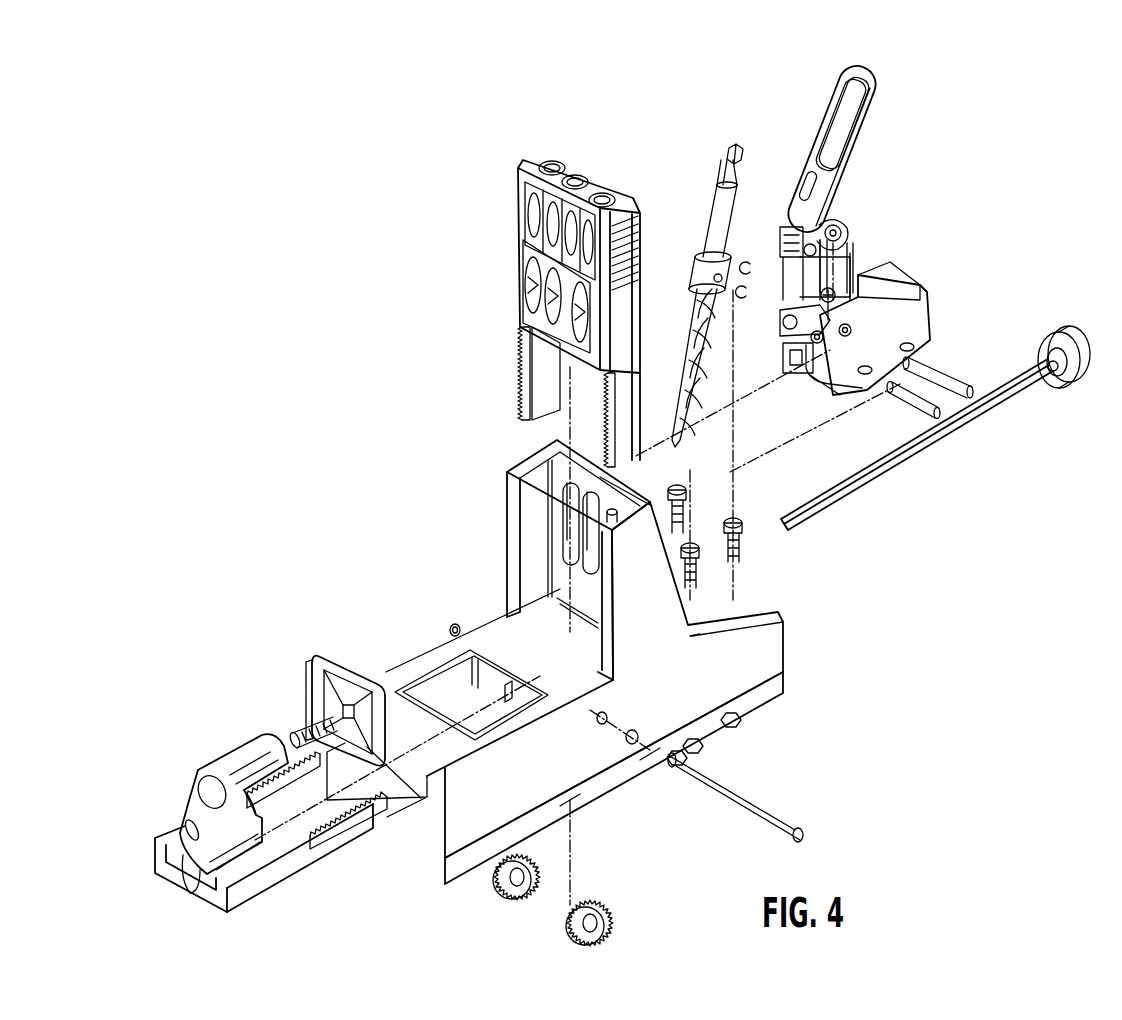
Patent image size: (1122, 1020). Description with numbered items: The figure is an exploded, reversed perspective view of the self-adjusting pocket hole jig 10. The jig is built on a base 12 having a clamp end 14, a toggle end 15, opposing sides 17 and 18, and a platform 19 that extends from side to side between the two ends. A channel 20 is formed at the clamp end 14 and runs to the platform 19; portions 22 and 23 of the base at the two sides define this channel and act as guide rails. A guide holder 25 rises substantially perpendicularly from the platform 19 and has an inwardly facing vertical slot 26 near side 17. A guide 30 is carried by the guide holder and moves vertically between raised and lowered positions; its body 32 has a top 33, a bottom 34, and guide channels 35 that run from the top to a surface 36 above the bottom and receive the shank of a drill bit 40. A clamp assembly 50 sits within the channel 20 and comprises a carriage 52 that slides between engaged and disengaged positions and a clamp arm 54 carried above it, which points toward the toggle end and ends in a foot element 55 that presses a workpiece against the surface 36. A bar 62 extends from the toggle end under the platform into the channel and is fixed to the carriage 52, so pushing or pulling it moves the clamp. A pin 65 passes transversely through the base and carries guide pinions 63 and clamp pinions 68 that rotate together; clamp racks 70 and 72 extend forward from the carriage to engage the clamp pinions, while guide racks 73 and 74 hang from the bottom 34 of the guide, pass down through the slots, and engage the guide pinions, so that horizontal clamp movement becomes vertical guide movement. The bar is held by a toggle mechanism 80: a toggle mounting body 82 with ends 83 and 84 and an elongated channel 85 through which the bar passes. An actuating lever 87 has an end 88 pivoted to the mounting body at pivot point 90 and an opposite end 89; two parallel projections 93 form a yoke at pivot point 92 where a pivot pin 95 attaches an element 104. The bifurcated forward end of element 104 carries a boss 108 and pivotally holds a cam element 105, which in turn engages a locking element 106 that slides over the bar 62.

The self-adjusting pocket hole jig 10 is at (398, 384).
The base 12 is at (846, 672).
The clamp end 14 is at (446, 872).
The toggle end 15 is at (778, 690).
The side 17 is at (410, 670).
The side 18 is at (580, 760).
The platform 19 is at (510, 650).
The channel 20 is at (445, 700).
The portion 22 is at (395, 676).
The portion 23 is at (520, 760).
The guide holder 25 is at (557, 440).
The vertical slot 26 is at (530, 500).
The guide 30 is at (490, 175).
The body 32 is at (519, 252).
The top 33 is at (551, 161).
The bottom 34 is at (548, 360).
The guide channels 35 is at (600, 190).
The surface 36 is at (555, 312).
The drill bit 40 is at (690, 320).
The clamp assembly 50 is at (244, 674).
The carriage 52 is at (250, 880).
The clamp arm 54 is at (232, 758).
The foot element 55 is at (320, 658).
The bar 62 is at (888, 478).
The guide pinions 63 is at (496, 897).
The pin 65 is at (740, 808).
The clamp pinions 68 is at (524, 870).
The clamp rack 70 is at (283, 783).
The clamp rack 72 is at (340, 840).
The guide rack 73 is at (519, 383).
The guide rack 74 is at (606, 430).
The toggle mechanism 80 is at (932, 247).
The toggle mounting body 82 is at (905, 316).
The end 83 is at (822, 380).
The end 84 is at (915, 288).
The elongated channel 85 is at (848, 322).
The actuating lever 87 is at (815, 148).
The end 88 is at (790, 230).
The end 89 is at (870, 74).
The pivot point 90 is at (784, 348).
The pivot point 92 is at (845, 240).
The parallel projections 93 is at (838, 226).
The pivot pin 95 is at (940, 385).
The element 104 is at (784, 318).
The cam element 105 is at (895, 405).
The locking element 106 is at (825, 330).
The boss 108 is at (833, 288).